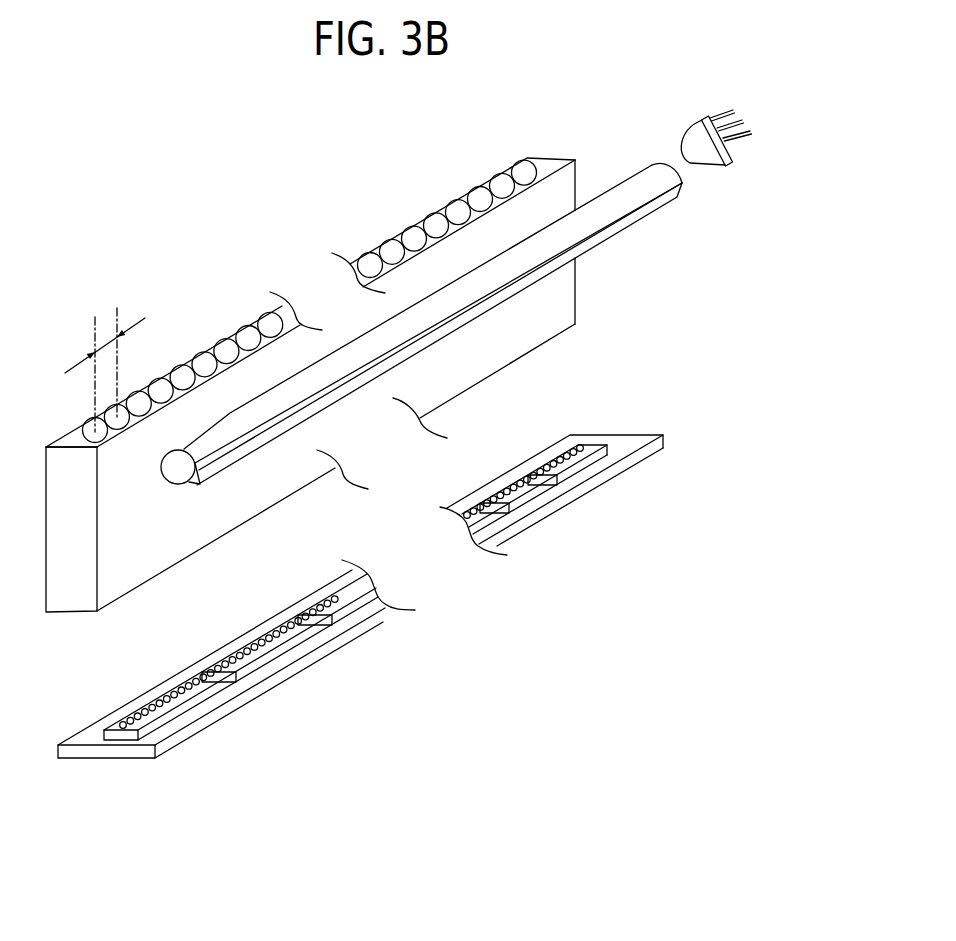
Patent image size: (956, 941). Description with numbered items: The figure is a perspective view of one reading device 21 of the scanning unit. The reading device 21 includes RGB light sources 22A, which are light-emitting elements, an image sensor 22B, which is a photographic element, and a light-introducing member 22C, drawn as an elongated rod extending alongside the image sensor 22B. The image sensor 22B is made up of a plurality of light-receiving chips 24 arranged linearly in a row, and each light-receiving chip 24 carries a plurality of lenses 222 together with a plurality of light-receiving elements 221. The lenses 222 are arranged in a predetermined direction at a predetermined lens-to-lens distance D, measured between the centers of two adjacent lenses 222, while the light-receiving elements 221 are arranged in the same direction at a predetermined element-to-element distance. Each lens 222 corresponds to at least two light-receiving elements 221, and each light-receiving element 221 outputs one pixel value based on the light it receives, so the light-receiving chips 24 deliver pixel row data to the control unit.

The reading device 21 is at (360, 894).
The RGB light sources 22A is at (705, 154).
The image sensor 22B is at (310, 347).
The light-introducing member 22C is at (620, 207).
The lens 222 is at (203, 364).
The light-receiving element 221 is at (197, 683).
The light-receiving chip 24 is at (360, 638).